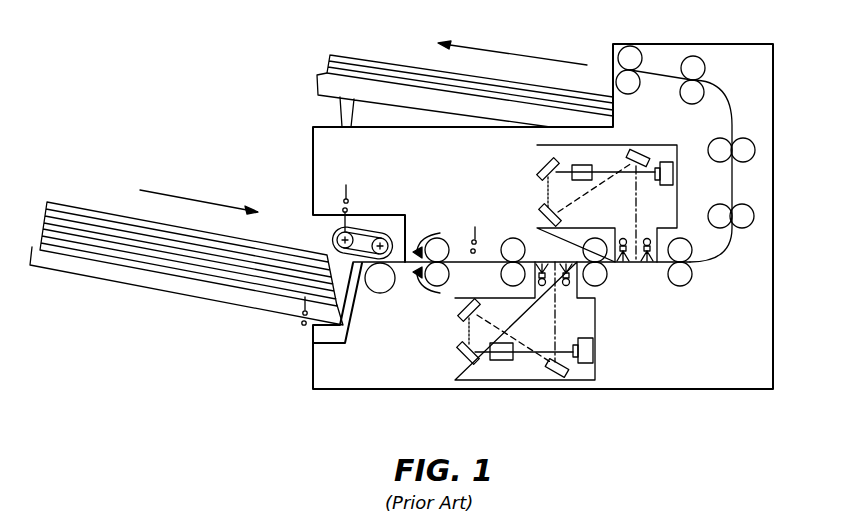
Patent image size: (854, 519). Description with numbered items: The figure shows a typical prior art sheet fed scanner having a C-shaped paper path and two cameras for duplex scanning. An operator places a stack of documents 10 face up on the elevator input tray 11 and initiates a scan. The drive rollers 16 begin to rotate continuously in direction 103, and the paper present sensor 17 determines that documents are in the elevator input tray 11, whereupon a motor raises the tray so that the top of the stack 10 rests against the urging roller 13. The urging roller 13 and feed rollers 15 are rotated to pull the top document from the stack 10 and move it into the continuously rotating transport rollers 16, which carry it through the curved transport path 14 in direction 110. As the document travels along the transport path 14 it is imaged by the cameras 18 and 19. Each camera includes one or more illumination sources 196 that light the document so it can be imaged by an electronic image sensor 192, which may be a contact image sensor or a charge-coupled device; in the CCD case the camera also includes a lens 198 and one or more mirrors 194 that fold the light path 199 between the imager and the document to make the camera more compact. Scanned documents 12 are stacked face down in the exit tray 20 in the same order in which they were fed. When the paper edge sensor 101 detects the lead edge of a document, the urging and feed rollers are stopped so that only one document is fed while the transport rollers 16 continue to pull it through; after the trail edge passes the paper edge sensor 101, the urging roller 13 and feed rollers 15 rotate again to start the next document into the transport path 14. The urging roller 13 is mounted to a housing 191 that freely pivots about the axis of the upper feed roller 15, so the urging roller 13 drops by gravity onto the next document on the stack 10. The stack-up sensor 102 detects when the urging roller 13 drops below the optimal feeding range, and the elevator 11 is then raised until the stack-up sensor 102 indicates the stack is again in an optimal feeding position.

The stack of documents 10 is at (75, 204).
The elevator input tray 11 is at (95, 280).
The scanned documents 12 is at (372, 60).
The urging roller 13 is at (333, 233).
The curved transport path 14 is at (734, 177).
The feed rollers 15 is at (390, 232).
The drive rollers 16 is at (449, 276).
The paper present sensor 17 is at (305, 330).
The camera 18 is at (537, 180).
The camera 19 is at (455, 345).
The exit tray 20 is at (315, 80).
The paper edge sensor 101 is at (478, 227).
The stack-up sensor 102 is at (348, 188).
The rotation direction of drive rollers 103 is at (441, 231).
The document transport direction 110 is at (172, 195).
The housing 191 is at (365, 240).
The electronic image sensor 192 is at (594, 353).
The mirrors 194 is at (463, 358).
The illumination sources 196 is at (567, 283).
The lens 198 is at (503, 362).
The light path 199 is at (522, 354).